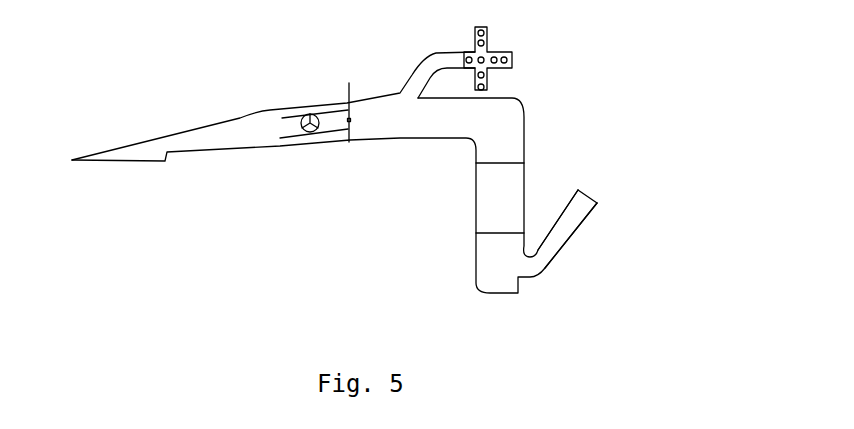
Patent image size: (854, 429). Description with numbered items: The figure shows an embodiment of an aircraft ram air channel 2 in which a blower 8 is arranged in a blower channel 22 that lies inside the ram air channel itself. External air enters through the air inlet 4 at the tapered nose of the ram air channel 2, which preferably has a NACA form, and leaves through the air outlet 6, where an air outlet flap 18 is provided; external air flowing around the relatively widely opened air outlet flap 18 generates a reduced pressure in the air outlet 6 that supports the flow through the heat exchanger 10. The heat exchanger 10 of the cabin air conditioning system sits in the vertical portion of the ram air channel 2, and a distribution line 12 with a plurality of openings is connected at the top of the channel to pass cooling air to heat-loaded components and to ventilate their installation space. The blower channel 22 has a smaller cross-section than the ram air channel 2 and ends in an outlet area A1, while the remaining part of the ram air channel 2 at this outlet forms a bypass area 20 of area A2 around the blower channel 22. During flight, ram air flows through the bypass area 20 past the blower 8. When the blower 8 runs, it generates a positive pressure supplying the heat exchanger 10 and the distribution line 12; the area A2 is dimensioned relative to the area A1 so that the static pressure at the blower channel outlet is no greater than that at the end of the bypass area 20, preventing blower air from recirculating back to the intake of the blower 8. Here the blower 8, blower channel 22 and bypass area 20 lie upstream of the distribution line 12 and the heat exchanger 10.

The ram air channel 2 is at (240, 127).
The air inlet 4 is at (120, 160).
The air outlet 6 is at (555, 243).
The blower 8 is at (307, 135).
The heat exchanger 10 is at (498, 197).
The distribution line 12 is at (487, 53).
The air outlet flap 18 is at (588, 192).
The bypass area 20 is at (337, 108).
The blower channel 22 is at (337, 130).
The outlet area A1 is at (351, 120).
The area A2 is at (354, 121).